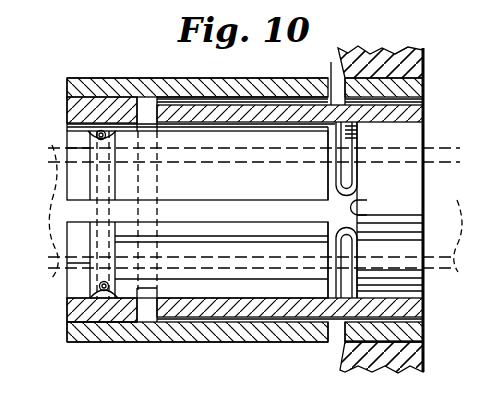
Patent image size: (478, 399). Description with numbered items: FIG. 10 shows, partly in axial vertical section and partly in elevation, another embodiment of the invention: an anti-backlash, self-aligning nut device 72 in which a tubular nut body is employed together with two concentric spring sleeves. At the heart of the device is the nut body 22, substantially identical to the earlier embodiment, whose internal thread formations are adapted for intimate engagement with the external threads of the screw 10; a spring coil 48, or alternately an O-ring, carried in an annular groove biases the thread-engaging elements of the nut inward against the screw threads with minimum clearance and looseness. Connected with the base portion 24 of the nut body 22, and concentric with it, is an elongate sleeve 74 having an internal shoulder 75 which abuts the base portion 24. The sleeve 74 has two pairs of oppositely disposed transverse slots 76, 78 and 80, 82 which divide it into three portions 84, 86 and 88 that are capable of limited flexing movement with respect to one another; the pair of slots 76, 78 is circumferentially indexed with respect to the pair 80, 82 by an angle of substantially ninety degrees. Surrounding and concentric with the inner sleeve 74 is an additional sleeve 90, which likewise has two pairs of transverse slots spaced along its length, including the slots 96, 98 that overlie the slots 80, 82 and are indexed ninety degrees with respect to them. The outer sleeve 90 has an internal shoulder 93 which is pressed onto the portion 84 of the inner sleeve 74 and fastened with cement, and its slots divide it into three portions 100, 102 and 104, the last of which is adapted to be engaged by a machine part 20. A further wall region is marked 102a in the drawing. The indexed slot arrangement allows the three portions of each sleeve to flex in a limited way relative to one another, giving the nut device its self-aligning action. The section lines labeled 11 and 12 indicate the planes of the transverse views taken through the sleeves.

The screw 10 is at (441, 274).
The section line 11- 11 is at (40, 205).
The section line 12- 12 is at (67, 38).
The machine part 20 is at (370, 62).
The nut body 22 is at (236, 336).
The base portion 24 is at (410, 138).
The spring coil 48 is at (90, 292).
The anti-backlash, self-aligning nut device 72 is at (428, 78).
The elongate sleeve 74 is at (66, 315).
The internal shoulder 75 is at (359, 122).
The transverse slot 76 is at (158, 172).
The transverse slot 78 is at (153, 294).
The transverse slot 80 is at (346, 163).
The transverse slot 82 is at (340, 290).
The sleeve portion 84 is at (125, 318).
The sleeve portion 86 is at (228, 63).
The sleeve portion 88 is at (421, 306).
The additional sleeve 90 is at (280, 345).
The internal shoulder 93 is at (145, 78).
The transverse slot 96 is at (331, 76).
The transverse slot 98 is at (337, 341).
The sleeve portion 100 is at (88, 78).
The sleeve portion 102 is at (204, 78).
The lower wall 102a is at (377, 370).
The sleeve portion 104 is at (403, 72).